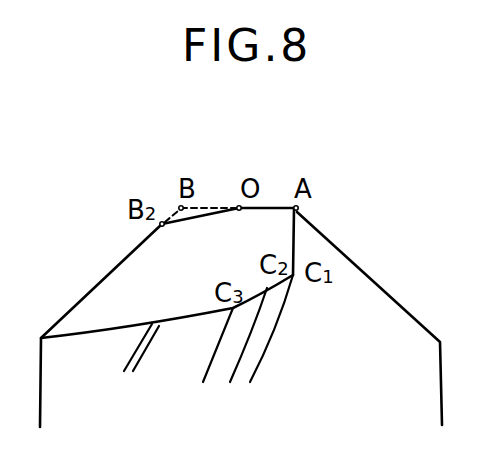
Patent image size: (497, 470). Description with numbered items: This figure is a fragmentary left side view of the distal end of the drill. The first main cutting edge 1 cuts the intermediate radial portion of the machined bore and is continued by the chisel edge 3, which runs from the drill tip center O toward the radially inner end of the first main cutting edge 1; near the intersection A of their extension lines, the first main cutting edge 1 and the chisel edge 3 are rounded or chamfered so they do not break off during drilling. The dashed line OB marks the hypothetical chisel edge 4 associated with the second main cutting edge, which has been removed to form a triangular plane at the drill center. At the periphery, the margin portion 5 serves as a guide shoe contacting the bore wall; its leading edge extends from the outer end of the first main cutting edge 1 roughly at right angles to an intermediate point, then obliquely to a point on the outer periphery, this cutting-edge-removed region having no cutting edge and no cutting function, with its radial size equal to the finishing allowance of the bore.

The first main cutting edge 1 is at (294, 245).
The chisel edge 3 is at (273, 208).
The hypothetical chisel edge 4 is at (214, 205).
The margin portion 5 is at (188, 328).